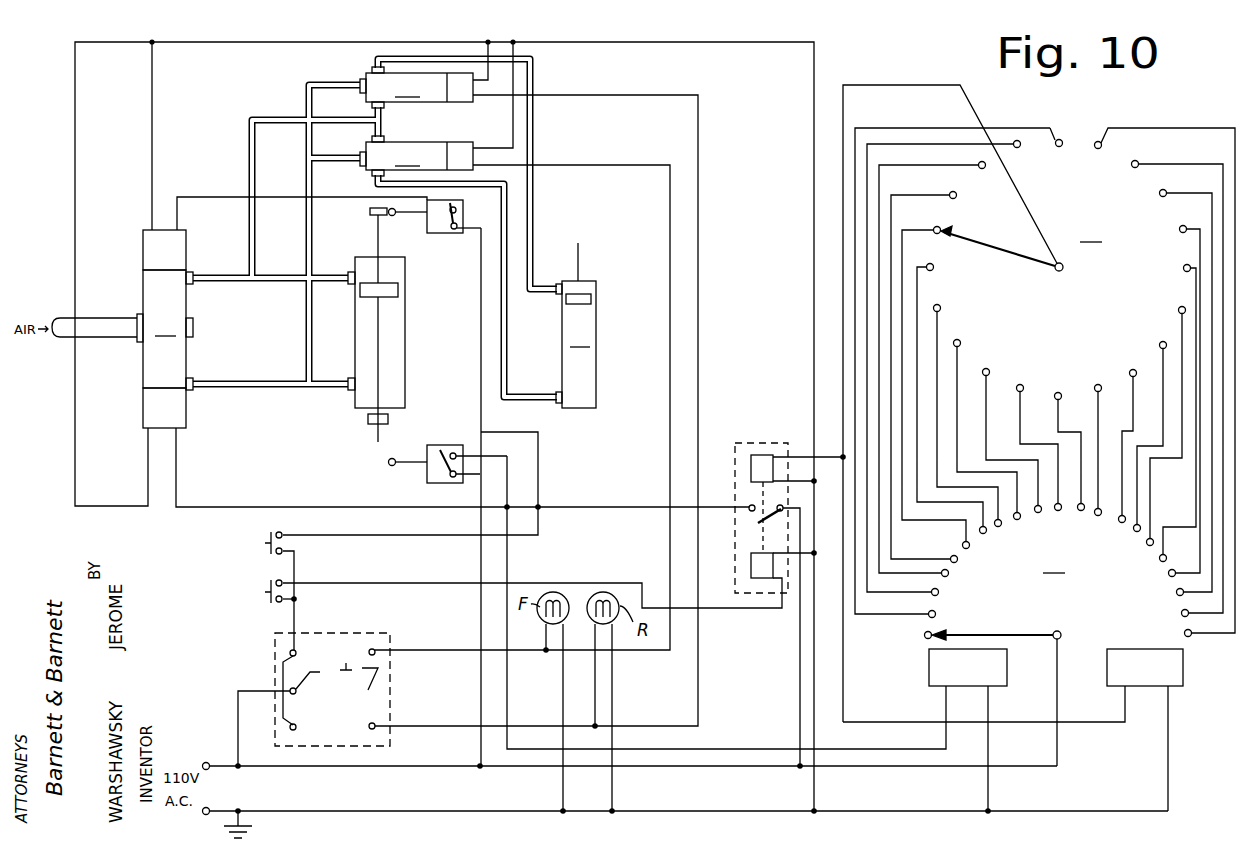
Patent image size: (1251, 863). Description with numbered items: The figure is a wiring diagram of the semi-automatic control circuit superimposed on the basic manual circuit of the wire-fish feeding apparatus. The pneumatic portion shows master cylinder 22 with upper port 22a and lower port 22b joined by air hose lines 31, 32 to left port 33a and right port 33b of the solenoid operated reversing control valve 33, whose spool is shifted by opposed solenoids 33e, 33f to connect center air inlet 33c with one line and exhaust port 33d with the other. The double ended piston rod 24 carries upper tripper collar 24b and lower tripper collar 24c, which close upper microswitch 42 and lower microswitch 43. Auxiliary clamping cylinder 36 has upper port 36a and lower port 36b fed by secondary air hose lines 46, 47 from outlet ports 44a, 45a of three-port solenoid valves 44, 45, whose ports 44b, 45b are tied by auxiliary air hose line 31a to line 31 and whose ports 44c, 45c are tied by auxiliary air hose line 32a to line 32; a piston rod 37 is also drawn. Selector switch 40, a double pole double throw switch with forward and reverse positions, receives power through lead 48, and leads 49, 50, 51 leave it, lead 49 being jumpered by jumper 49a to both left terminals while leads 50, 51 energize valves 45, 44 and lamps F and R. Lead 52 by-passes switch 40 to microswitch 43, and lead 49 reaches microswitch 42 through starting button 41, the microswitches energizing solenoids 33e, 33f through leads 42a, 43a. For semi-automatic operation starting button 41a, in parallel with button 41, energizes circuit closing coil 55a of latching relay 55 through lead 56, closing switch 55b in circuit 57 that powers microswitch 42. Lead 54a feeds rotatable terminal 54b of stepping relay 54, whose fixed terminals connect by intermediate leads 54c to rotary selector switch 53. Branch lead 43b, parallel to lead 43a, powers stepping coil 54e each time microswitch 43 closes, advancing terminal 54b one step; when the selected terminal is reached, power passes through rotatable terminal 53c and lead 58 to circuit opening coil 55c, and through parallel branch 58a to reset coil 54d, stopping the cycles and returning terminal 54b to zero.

The master cylinder 22 is at (406, 318).
The upper port 22a is at (347, 280).
The lower port 22b is at (347, 380).
The piston rod 24 is at (376, 240).
The upper tripper collar 24b is at (368, 212).
The lower tripper collar 24c is at (389, 419).
The air hose line 31 is at (232, 282).
The auxiliary air hose line 31a is at (248, 157).
The air hose line 32 is at (238, 388).
The auxiliary air hose line 32a is at (305, 230).
The reversing control valve 33 is at (164, 329).
The left port 33a is at (193, 272).
The right port 33b is at (193, 380).
The center air inlet 33c is at (137, 312).
The exhaust port 33d is at (193, 328).
The solenoid 33e is at (143, 241).
The solenoid 33f is at (186, 425).
The auxiliary clamping cylinder 36 is at (579, 344).
The upper port 36a is at (556, 283).
The lower port 36b is at (558, 410).
The piston rod 37 is at (580, 264).
The selector switch 40 is at (275, 654).
The starting button 41 is at (270, 536).
The starting button 41a is at (270, 584).
The upper microswitch 42 is at (433, 234).
The lead 42a is at (277, 197).
The lower microswitch 43 is at (425, 476).
The lead 43a is at (289, 507).
The branch lead 43b is at (507, 561).
The solenoid operated valve 44 is at (419, 87).
The outlet port 44a is at (370, 68).
The port 44b is at (385, 108).
The port 44c is at (360, 86).
The solenoid operated valve 45 is at (419, 156).
The outlet port 45a is at (388, 140).
The port 45b is at (370, 176).
The port 45c is at (360, 158).
The secondary air hose line 46 is at (535, 133).
The secondary air hose line 47 is at (507, 326).
The lead 48 is at (238, 714).
The lead 49 is at (292, 618).
The jumper 49a is at (282, 676).
The lead 50 is at (578, 165).
The lead 51 is at (566, 96).
The lead 52 is at (480, 612).
The rotary selector switch 53 is at (1059, 270).
The rotatable terminal 53c is at (1000, 268).
The stepping relay 54 is at (1053, 574).
The lead 54a is at (998, 766).
The rotatable terminal 54b is at (980, 634).
The intermediate lead 54c is at (890, 130).
The reset coil 54d is at (1183, 668).
The stepping coil 54e is at (1007, 662).
The latching relay 55 is at (733, 555).
The circuit closing coil 55a is at (751, 566).
The switch 55b is at (765, 505).
The circuit opening coil 55c is at (751, 468).
The lead 56 is at (382, 580).
The circuit 57 is at (614, 491).
The lead 58 is at (895, 90).
The parallel branch 58a is at (843, 661).